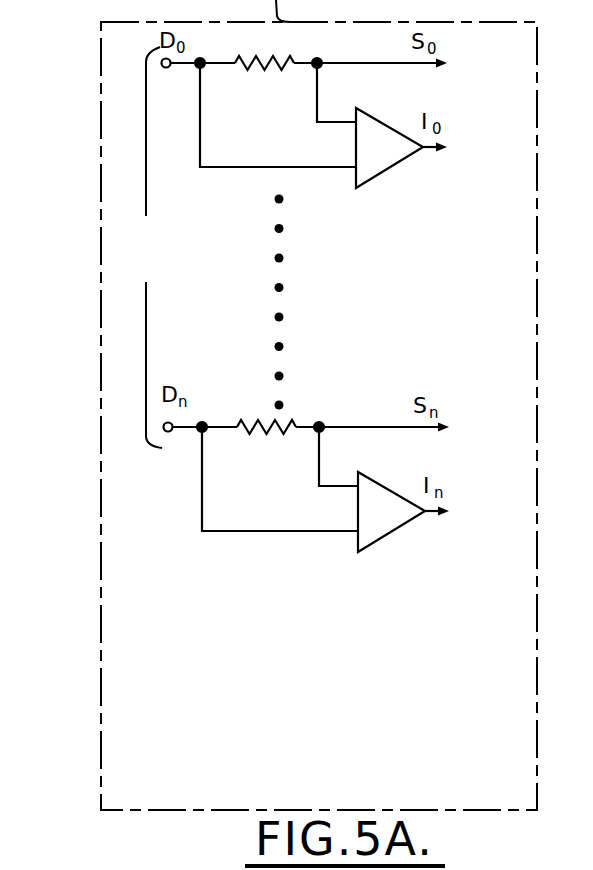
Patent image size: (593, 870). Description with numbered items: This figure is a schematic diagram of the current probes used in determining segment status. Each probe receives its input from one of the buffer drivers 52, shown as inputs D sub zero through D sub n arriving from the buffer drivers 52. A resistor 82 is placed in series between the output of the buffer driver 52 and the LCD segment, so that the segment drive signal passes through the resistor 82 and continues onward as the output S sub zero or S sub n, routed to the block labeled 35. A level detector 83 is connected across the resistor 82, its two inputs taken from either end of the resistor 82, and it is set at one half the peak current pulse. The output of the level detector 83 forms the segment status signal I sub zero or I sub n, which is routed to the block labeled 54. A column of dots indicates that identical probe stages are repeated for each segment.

The resistor 82 is at (261, 70).
The level detector 83 is at (391, 125).
The destination block 35 is at (524, 78).
The destination block 54 is at (524, 162).
The buffer driver 52 is at (168, 278).